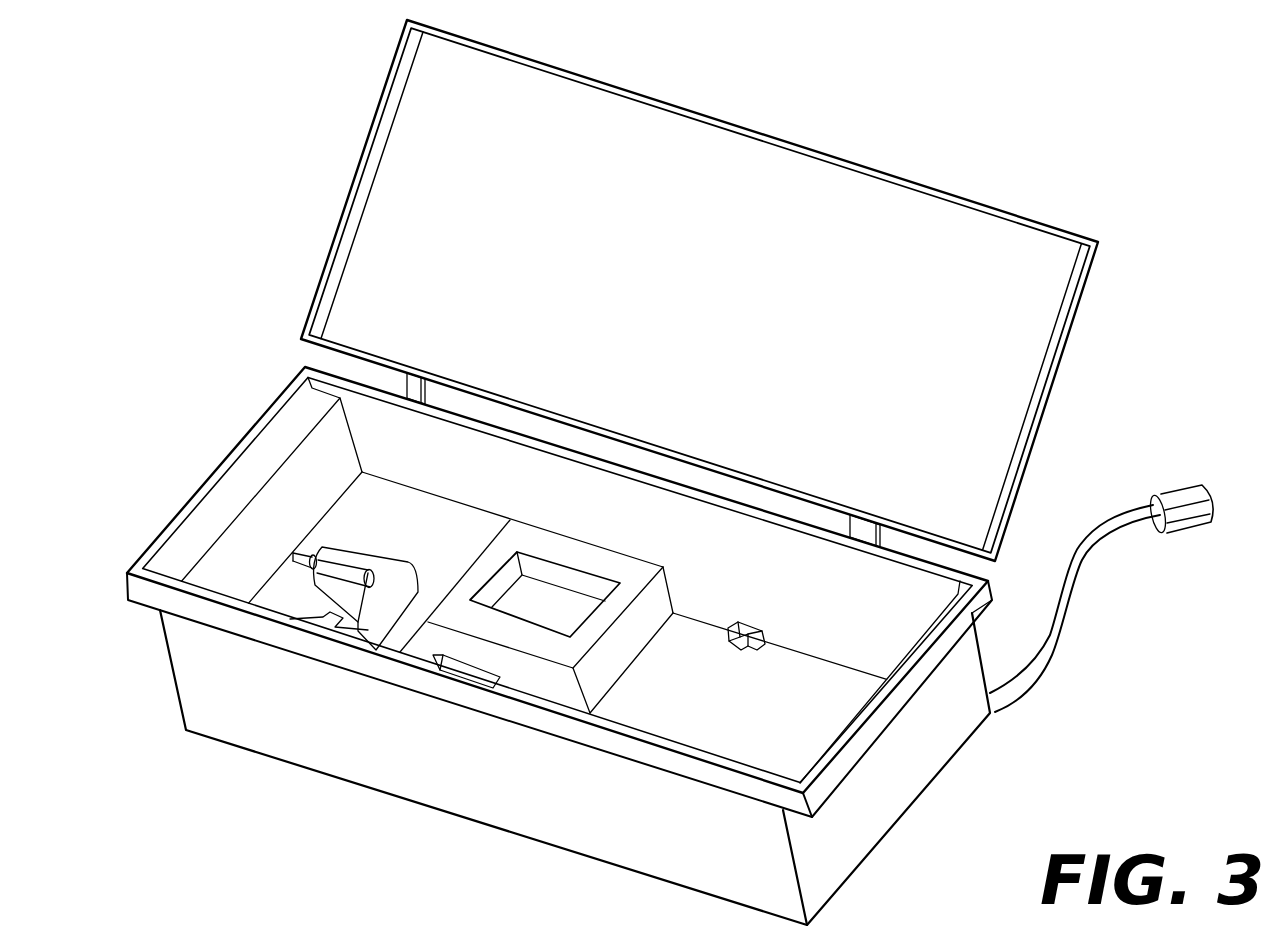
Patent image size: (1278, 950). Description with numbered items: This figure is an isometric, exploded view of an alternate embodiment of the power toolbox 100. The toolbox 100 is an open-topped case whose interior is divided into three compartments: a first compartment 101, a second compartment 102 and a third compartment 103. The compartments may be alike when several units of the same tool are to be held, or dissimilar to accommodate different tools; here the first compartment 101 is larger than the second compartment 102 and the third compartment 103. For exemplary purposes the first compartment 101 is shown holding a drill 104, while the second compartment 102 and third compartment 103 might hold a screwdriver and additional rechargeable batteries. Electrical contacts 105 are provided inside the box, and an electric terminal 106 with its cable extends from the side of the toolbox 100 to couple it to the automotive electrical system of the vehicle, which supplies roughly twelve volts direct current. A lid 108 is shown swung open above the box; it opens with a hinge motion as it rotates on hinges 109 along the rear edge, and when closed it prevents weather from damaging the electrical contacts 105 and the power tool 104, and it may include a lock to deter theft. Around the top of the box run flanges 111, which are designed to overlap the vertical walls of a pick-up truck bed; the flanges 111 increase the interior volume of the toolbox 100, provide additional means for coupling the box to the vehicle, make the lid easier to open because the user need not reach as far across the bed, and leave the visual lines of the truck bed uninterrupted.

The power toolbox 100 is at (440, 800).
The first compartment 101 is at (445, 513).
The second compartment 102 is at (570, 698).
The third compartment 103 is at (627, 640).
The drill 104 is at (352, 553).
The electrical contacts 105 is at (750, 623).
The electric terminal 106 is at (1188, 527).
The lid 108 is at (1058, 342).
The hinges 109 is at (868, 527).
The flanges 111 is at (142, 591).